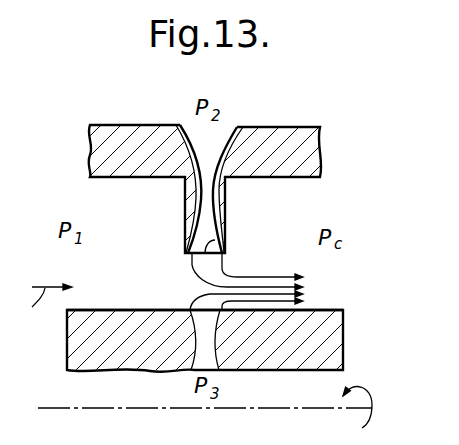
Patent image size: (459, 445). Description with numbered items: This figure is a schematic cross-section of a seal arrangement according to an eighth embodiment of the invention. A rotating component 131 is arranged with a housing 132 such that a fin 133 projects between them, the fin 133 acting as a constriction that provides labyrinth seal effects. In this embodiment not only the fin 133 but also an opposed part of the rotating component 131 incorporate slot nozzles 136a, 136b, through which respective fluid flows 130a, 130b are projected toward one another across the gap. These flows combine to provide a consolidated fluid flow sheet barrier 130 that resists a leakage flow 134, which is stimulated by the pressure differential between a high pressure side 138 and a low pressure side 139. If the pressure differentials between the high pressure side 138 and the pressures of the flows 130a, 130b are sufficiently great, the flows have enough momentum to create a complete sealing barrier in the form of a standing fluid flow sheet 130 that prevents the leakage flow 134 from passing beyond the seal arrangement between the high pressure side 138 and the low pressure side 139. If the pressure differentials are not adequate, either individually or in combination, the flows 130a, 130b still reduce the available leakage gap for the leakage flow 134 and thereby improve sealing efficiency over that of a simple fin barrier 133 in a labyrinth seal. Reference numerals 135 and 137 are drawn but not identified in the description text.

The housing 132 is at (293, 132).
The fin 133 is at (196, 197).
The slot nozzle 136a is at (205, 147).
The high pressure side 138 is at (98, 208).
The low pressure side 139 is at (342, 208).
The nozzle outlet edge 135 is at (215, 240).
The fluid flow sheet barrier 130 is at (310, 282).
The fluid flow 130a is at (205, 266).
The fluid flow 130b is at (210, 307).
The rotating component 131 is at (323, 340).
The substrate surface 137 is at (322, 310).
The slot nozzle 136b is at (208, 338).
The leakage flow 134 is at (38, 309).